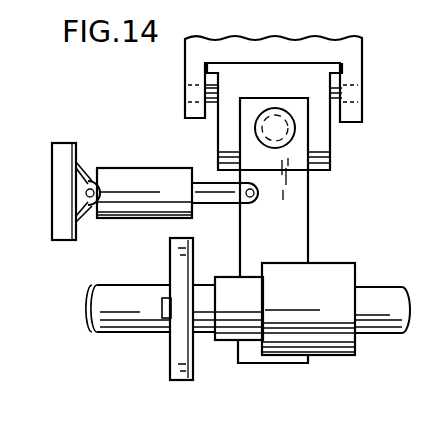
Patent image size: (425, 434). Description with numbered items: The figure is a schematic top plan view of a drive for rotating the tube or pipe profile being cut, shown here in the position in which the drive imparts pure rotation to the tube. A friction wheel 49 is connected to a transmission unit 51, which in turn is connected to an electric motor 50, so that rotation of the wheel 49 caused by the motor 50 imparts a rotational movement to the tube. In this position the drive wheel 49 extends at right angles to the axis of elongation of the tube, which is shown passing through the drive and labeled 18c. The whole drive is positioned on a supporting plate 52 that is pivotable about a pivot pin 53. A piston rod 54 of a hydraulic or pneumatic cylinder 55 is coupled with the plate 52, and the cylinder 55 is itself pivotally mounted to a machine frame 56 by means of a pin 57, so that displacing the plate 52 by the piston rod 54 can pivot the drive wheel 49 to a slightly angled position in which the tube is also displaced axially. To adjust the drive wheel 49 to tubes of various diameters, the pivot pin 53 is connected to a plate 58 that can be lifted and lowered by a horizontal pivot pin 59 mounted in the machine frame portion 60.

The shaft 18c is at (100, 293).
The friction wheel 49 is at (175, 363).
The electric motor 50 is at (327, 340).
The transmission unit 51 is at (237, 328).
The supporting plate 52 is at (292, 202).
The pivot pin 53 is at (282, 132).
The piston rod 54 is at (222, 204).
The hydraulic or pneumatic cylinder 55 is at (123, 183).
The machine frame 56 is at (68, 158).
The pin 57 is at (90, 206).
The plate 58 is at (318, 122).
The horizontal pivot pin 59 is at (187, 91).
The machine frame portion 60 is at (278, 48).